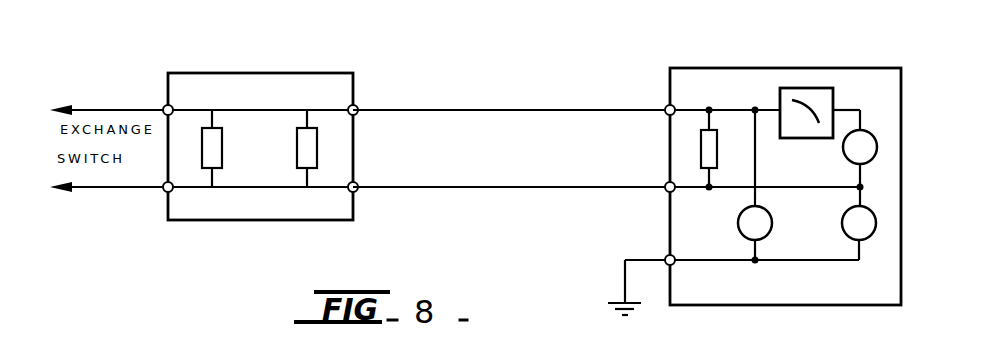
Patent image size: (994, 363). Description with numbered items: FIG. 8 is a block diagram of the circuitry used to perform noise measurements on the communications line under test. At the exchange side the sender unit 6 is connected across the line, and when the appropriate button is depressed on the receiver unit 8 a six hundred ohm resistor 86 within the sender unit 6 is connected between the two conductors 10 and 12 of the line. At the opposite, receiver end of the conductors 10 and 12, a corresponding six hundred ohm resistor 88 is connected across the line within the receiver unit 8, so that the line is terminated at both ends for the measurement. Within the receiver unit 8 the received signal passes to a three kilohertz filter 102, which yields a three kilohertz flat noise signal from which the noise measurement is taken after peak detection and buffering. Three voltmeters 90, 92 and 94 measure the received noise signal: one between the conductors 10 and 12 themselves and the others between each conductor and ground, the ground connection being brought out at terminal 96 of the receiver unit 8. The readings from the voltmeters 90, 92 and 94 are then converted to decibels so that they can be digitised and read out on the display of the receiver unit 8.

The sender unit 6 is at (360, 83).
The receiver unit 8 is at (660, 72).
The conductor 10 is at (530, 110).
The conductor 12 is at (473, 190).
The 600 Ω resistor 86 is at (298, 132).
The 600 Ω resistor 88 is at (699, 146).
The voltmeter 90 is at (770, 234).
The voltmeter 92 is at (878, 131).
The voltmeter 94 is at (848, 243).
The ground terminal 96 is at (658, 250).
The 3 kHz filter 102 is at (803, 88).